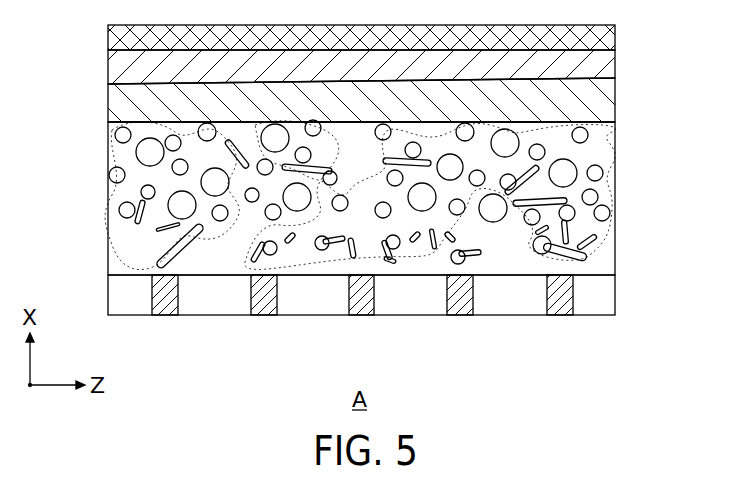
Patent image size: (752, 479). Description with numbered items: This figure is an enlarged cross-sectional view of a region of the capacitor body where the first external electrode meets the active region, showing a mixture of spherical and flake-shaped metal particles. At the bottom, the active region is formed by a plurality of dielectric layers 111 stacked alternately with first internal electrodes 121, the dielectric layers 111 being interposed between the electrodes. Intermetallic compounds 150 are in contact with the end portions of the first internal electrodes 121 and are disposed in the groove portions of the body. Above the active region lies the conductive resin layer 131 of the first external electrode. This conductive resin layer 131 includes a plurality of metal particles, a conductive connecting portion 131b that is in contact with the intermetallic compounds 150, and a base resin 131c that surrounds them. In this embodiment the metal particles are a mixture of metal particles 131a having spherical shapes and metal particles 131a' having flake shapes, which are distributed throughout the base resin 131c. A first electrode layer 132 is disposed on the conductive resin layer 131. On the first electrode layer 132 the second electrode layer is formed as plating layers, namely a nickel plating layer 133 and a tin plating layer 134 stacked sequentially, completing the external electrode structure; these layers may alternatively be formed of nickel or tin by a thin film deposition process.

The tin (Sn) plating layer 134 is at (616, 42).
The nickel (Ni) plating layer 133 is at (616, 75).
The first electrode layer 132 is at (616, 108).
The conductive resin layer 131 is at (407, 245).
The base resin 131c is at (617, 145).
The metal particles having spherical shapes 131a is at (419, 173).
The metal particles having flake shapes 131a' is at (409, 174).
The conductive connecting portion 131b is at (612, 236).
The dielectric layer 111 is at (493, 315).
The first internal electrode 121 is at (560, 305).
The intermetallic compound 150 is at (362, 315).